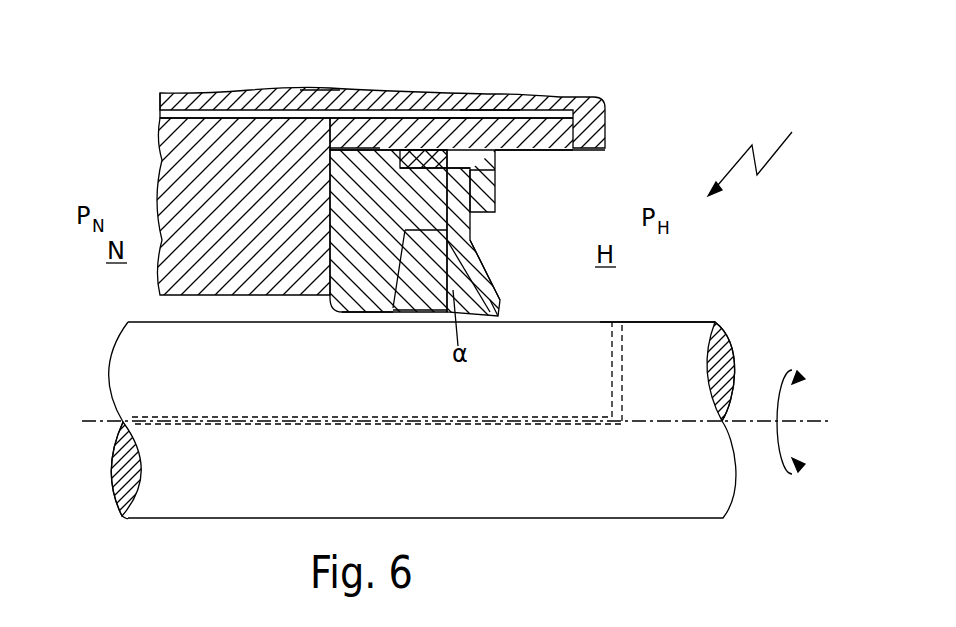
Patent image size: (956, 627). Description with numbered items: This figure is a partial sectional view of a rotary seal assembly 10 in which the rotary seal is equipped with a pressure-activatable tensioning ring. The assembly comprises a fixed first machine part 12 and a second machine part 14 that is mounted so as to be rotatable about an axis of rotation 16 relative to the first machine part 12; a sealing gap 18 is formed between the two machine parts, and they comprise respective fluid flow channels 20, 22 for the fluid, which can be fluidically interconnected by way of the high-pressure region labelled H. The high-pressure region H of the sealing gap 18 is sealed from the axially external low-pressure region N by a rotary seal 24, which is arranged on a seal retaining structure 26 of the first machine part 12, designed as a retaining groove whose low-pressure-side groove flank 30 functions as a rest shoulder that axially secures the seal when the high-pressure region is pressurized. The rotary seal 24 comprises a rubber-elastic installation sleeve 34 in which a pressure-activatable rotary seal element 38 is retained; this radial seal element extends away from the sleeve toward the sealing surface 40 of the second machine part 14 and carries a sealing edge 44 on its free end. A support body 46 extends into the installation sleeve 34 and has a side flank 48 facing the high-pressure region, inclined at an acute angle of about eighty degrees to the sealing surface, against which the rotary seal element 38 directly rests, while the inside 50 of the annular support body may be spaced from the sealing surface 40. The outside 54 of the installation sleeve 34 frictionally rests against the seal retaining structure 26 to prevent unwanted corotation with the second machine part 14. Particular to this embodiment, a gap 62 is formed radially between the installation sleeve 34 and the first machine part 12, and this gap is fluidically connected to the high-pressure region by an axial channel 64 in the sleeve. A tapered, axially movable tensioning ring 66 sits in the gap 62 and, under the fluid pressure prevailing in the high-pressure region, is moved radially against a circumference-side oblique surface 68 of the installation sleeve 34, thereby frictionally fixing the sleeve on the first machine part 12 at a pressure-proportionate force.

The rotary seal assembly 10 is at (759, 151).
The first machine part 12 is at (186, 160).
The second machine part 14 is at (418, 484).
The axis of rotation 16 is at (752, 421).
The sealing gap 18 is at (226, 311).
The fluid flow channel 20 is at (545, 97).
The fluid flow channel 22 is at (146, 417).
The rotary seal 24 is at (494, 228).
The seal retaining structure 26 is at (534, 158).
The groove flank 30 is at (330, 200).
The installation sleeve 34 is at (355, 148).
The rotary seal element 38 is at (470, 271).
The sealing surface 40 is at (680, 321).
The sealing edge 44 is at (480, 302).
The support body 46 is at (431, 285).
The side flank 48 is at (498, 292).
The inside of the support body 50 is at (400, 312).
The outside of the installation sleeve 54 is at (318, 94).
The gap 62 is at (485, 95).
The axial channel 64 is at (500, 158).
The tensioning ring 66 is at (437, 148).
The oblique surface 68 is at (396, 150).